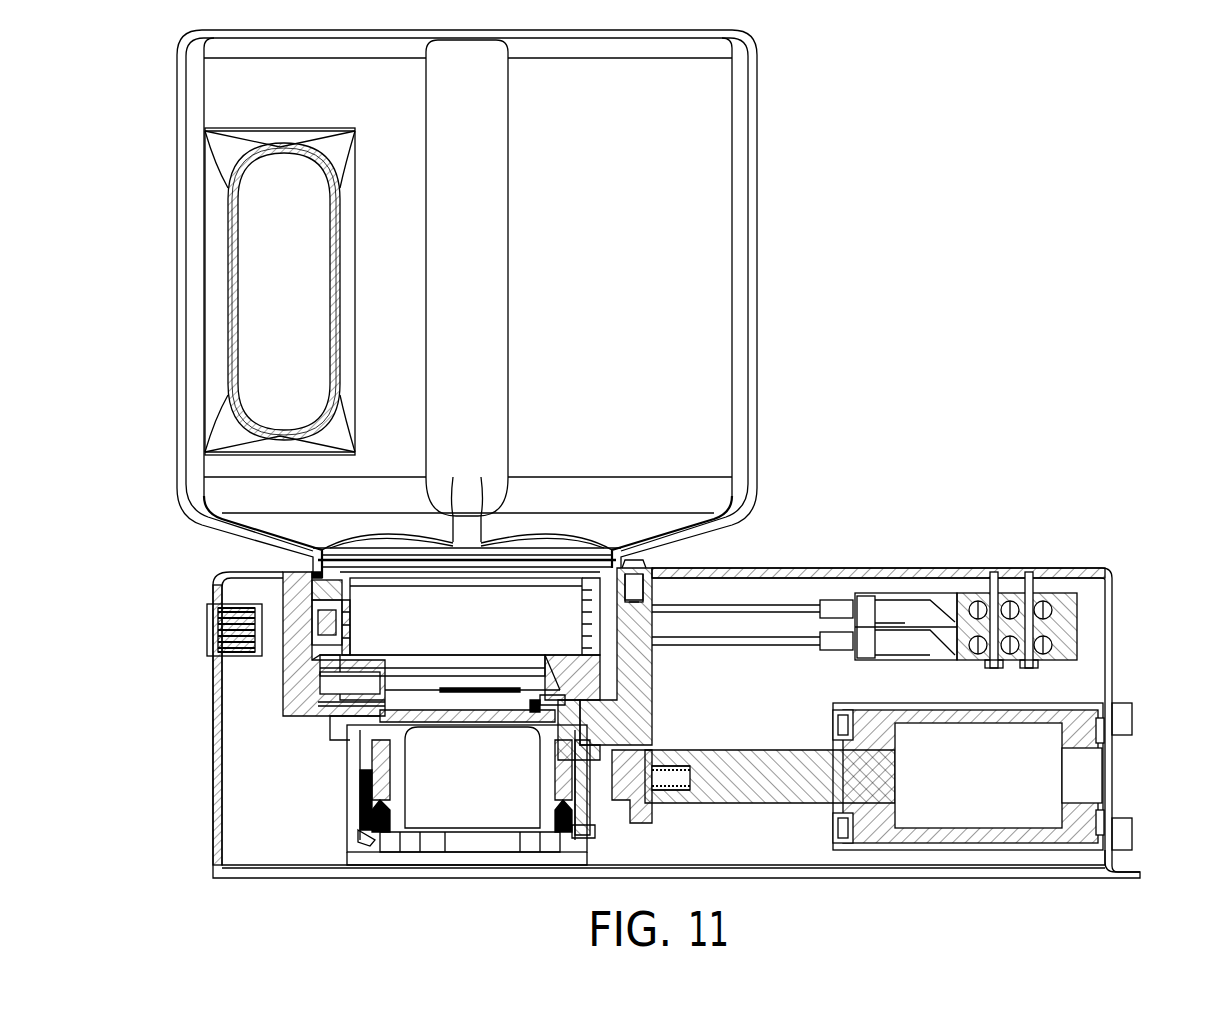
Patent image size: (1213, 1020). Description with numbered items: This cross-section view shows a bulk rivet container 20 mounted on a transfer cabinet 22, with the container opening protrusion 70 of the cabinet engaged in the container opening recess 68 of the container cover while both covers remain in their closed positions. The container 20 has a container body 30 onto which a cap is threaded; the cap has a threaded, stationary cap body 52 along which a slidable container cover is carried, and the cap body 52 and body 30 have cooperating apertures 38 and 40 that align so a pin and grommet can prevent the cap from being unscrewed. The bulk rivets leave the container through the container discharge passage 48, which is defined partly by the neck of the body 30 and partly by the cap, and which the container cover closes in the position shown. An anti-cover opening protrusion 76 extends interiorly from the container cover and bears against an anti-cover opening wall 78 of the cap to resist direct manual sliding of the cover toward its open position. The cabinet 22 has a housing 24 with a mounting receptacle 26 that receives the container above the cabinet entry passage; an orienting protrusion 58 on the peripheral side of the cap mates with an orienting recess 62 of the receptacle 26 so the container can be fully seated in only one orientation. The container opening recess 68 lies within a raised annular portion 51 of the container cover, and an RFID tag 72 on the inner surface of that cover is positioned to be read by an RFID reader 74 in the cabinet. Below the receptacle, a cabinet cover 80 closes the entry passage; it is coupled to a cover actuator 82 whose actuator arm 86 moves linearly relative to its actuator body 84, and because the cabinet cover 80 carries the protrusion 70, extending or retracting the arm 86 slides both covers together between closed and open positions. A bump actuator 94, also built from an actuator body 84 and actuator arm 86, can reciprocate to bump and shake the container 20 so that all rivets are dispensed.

The bulk rivet container 20 is at (509, 304).
The transfer cabinet 22 is at (706, 695).
The housing 24 is at (820, 565).
The mounting receptacle 26 is at (625, 676).
The container body 30 is at (716, 271).
The cooperating aperture 38 is at (325, 622).
The cooperating aperture 40 is at (350, 622).
The container discharge passage 48 is at (470, 636).
The raised portion 51 is at (595, 732).
The cap body 52 is at (638, 648).
The orienting protrusion 58 is at (310, 672).
The orienting recess 62 is at (305, 578).
The container opening recess 68 is at (608, 700).
The container opening protrusion 70 is at (580, 745).
The RFID tag 72 is at (468, 688).
The RFID reader 74 is at (492, 800).
The anti-cover opening protrusion 76 is at (532, 690).
The anti-cover opening wall 78 is at (548, 690).
The cabinet cover 80 is at (400, 720).
The cover actuator 82 is at (896, 868).
The actuator body 84 is at (1010, 815).
The actuator arm 86 is at (748, 795).
The bump actuator 94 is at (365, 790).